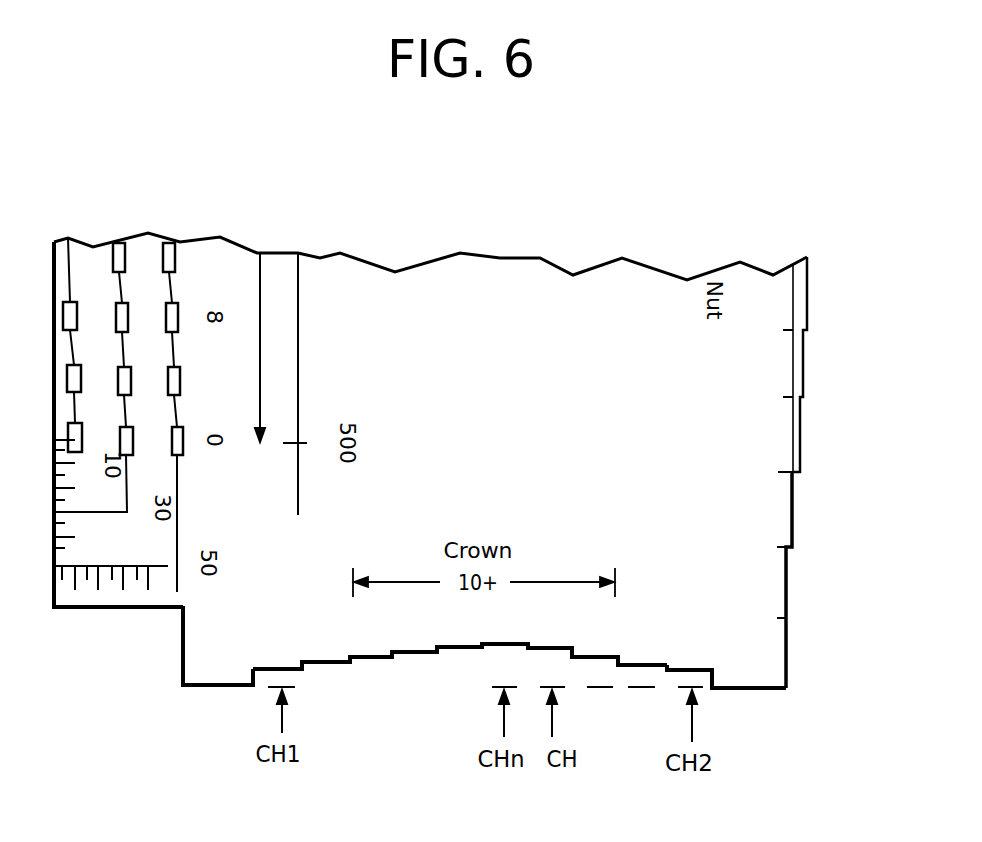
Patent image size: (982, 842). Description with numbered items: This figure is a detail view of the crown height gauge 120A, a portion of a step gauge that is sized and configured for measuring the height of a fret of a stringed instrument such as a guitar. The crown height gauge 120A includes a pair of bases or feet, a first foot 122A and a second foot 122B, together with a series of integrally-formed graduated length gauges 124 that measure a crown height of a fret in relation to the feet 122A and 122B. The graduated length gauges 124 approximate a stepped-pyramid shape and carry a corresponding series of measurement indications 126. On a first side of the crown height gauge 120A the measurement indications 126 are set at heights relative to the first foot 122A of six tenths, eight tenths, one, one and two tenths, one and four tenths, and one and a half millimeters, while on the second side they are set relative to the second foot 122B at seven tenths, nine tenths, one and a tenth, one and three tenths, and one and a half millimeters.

The crown height gauge 120A is at (476, 475).
The first foot 122A is at (220, 675).
The second foot 122B is at (750, 675).
The graduated length gauges 124 is at (391, 666).
The measurement indications 126 is at (686, 604).